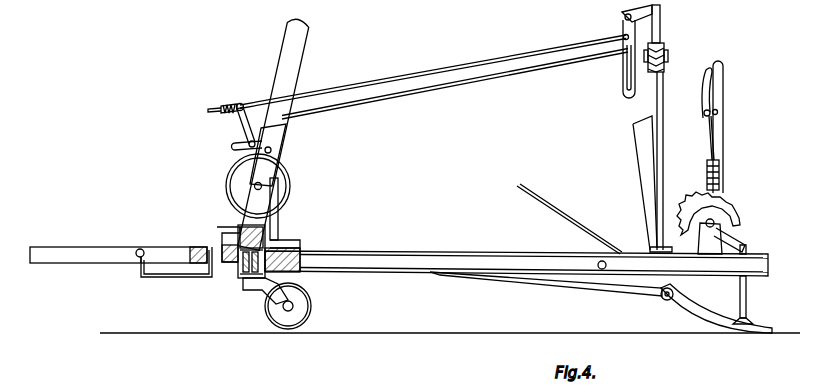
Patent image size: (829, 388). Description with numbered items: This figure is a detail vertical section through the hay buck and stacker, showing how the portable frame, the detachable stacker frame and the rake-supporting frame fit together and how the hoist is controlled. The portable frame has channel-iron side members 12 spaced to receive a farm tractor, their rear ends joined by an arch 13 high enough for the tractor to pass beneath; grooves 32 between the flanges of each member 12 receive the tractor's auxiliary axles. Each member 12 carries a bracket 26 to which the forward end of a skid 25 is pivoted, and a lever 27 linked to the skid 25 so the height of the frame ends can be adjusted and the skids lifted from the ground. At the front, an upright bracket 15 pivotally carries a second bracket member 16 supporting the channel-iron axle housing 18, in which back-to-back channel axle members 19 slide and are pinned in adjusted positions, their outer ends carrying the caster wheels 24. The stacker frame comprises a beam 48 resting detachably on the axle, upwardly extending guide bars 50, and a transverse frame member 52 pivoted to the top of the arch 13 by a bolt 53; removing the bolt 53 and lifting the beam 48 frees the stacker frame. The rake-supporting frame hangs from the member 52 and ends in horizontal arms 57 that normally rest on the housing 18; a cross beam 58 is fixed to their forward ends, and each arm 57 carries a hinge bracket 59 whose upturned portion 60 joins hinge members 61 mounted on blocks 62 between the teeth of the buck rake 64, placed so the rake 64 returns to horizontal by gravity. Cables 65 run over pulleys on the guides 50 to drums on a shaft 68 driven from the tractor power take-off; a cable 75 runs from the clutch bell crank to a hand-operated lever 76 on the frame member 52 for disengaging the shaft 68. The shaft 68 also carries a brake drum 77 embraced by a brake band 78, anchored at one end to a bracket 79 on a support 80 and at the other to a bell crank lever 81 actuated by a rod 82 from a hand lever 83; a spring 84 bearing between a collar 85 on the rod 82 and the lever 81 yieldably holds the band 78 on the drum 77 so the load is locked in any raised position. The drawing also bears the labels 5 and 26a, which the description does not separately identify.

The strut 5 is at (630, 183).
The side members 12 is at (401, 253).
The arch 13 is at (660, 149).
The upright bracket 15 is at (284, 234).
The bracket member 16 is at (278, 250).
The axle housing 18 is at (297, 258).
The axle members 19 is at (248, 268).
The caster wheels 24 is at (307, 301).
The skids 25 is at (704, 318).
The bracket 26 is at (747, 294).
The pivot 26a is at (663, 289).
The lever 27 is at (720, 150).
The grooves 32 is at (743, 262).
The beam 48 is at (251, 239).
The guide bar 50 is at (308, 53).
The frame member 52 is at (662, 32).
The bolt 53 is at (669, 58).
The horizontal arm 57 is at (539, 281).
The cross beam 58 is at (216, 228).
The hinge bracket 59 is at (172, 278).
The upwardly extending portion 60 is at (138, 264).
The hinge members 61 is at (142, 249).
The blocks 62 is at (171, 252).
The buck rake 64 is at (89, 251).
The cables 65 is at (561, 211).
The shaft 68 is at (254, 186).
The cable 75 is at (418, 88).
The hand-operated lever 76 is at (632, 62).
The brake drum 77 is at (281, 190).
The brake band 78 is at (292, 173).
The bracket 79 is at (286, 128).
The support 80 is at (262, 170).
The bell crank lever 81 is at (241, 104).
The rod 82 is at (389, 79).
The hand-actuated lever 83 is at (623, 82).
The spring 84 is at (227, 104).
The collar 85 is at (209, 112).